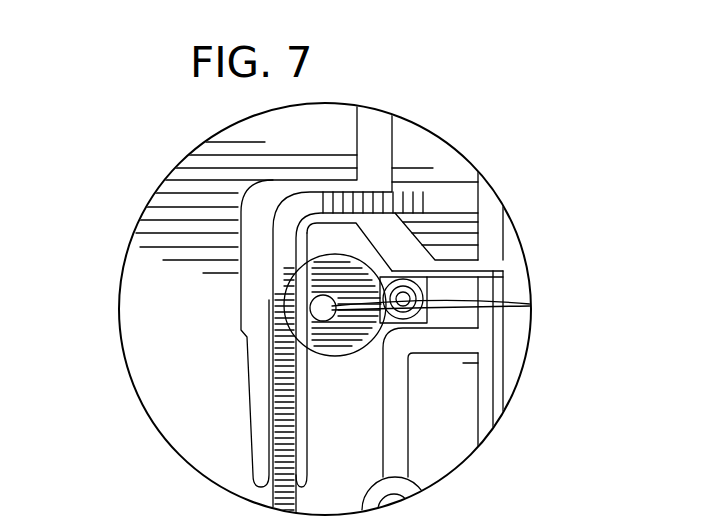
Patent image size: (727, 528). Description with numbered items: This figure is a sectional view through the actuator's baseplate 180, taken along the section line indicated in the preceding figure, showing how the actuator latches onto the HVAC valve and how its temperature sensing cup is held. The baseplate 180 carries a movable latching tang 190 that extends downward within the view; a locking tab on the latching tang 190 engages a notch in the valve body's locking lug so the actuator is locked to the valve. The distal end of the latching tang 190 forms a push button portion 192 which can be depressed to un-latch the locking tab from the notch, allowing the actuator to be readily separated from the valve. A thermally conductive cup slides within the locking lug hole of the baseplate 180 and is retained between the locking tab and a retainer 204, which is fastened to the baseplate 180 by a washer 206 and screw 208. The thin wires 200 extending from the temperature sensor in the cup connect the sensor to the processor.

The baseplate 180 is at (127, 316).
The latching tang 190 is at (280, 417).
The push button portion 192 is at (493, 217).
The wires 200 is at (530, 305).
The retainer 204 is at (358, 333).
The washer 206 is at (420, 296).
The screw 208 is at (415, 270).